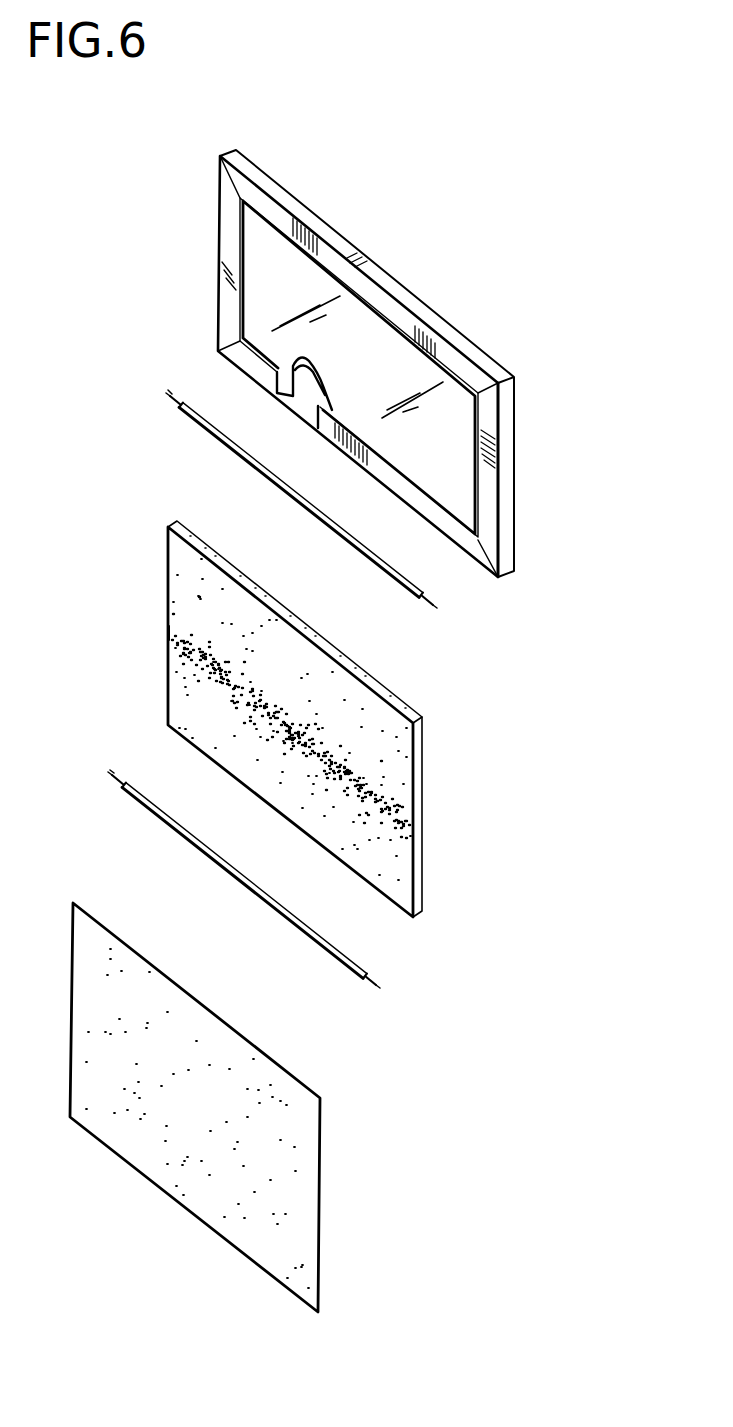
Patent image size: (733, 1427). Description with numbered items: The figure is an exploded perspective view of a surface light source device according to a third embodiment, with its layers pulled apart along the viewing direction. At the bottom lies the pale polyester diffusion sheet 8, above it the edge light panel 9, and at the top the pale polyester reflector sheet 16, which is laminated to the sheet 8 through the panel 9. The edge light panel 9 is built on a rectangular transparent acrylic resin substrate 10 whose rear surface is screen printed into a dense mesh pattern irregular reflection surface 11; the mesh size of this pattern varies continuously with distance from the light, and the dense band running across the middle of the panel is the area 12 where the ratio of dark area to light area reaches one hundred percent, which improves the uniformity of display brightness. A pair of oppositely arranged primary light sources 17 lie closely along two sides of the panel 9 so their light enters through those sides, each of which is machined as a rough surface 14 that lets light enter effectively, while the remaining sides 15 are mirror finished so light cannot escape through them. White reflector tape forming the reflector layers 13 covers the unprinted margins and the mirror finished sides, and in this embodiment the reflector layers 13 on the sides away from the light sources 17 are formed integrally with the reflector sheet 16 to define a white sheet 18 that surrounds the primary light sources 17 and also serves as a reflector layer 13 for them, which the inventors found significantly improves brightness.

The diffusion sheet 8 is at (320, 1213).
The edge light panel 9 is at (513, 767).
The transparent acrylic resin substrate 10 is at (423, 773).
The irregular reflection surface 11 is at (410, 790).
The 100% ratio area 12 is at (168, 632).
The reflector layer 13 is at (218, 257).
The rough surface 14 is at (193, 536).
The remaining sides 15 is at (418, 887).
The reflector sheet 16 is at (458, 428).
The primary light source 17 is at (395, 585).
The white sheet 18 is at (604, 418).